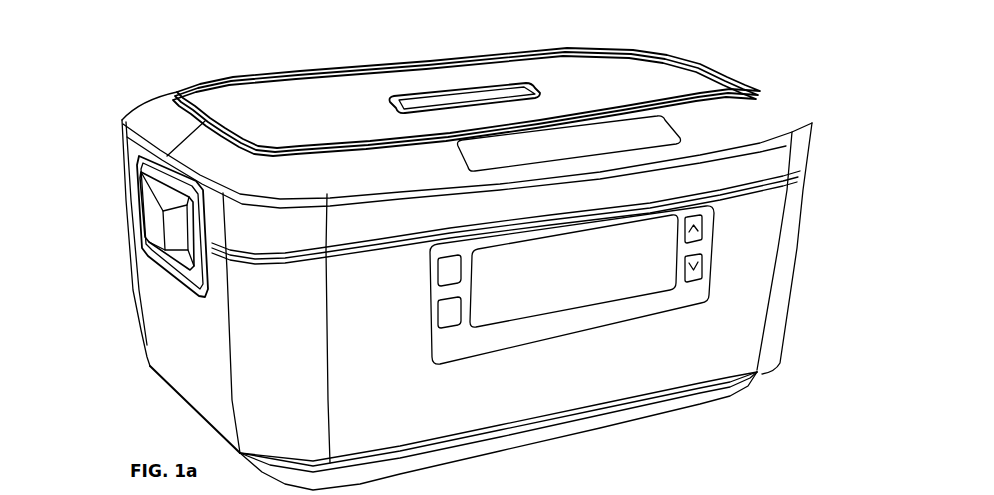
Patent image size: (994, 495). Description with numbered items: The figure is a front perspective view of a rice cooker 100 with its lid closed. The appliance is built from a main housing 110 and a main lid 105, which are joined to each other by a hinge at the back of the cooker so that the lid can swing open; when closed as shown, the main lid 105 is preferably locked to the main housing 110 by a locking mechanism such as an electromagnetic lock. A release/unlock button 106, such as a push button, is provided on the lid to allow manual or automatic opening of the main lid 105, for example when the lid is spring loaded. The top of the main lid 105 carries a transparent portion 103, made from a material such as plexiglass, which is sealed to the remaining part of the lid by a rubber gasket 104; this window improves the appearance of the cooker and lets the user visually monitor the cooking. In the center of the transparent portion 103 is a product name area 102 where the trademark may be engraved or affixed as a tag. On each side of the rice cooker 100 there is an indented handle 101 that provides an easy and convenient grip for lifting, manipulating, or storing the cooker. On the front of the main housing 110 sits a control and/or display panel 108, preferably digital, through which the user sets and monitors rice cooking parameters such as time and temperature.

The rice cooker 100 is at (757, 33).
The indented handle 101 is at (157, 223).
The product name area 102 is at (445, 94).
The transparent portion 103 is at (582, 80).
The rubber gasket 104 is at (699, 80).
The main lid 105 is at (397, 212).
The release/unlock button 106 is at (583, 138).
The control and/or display panel 108 is at (583, 279).
The main housing 110 is at (770, 362).